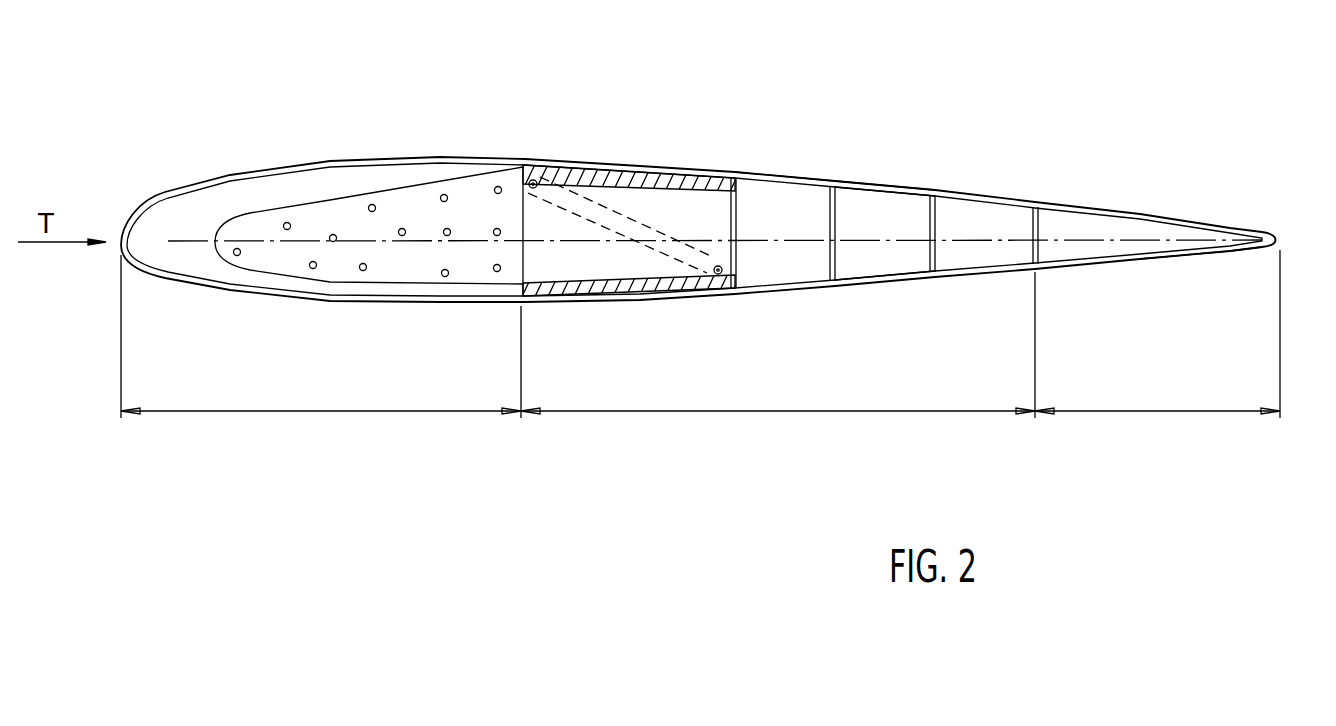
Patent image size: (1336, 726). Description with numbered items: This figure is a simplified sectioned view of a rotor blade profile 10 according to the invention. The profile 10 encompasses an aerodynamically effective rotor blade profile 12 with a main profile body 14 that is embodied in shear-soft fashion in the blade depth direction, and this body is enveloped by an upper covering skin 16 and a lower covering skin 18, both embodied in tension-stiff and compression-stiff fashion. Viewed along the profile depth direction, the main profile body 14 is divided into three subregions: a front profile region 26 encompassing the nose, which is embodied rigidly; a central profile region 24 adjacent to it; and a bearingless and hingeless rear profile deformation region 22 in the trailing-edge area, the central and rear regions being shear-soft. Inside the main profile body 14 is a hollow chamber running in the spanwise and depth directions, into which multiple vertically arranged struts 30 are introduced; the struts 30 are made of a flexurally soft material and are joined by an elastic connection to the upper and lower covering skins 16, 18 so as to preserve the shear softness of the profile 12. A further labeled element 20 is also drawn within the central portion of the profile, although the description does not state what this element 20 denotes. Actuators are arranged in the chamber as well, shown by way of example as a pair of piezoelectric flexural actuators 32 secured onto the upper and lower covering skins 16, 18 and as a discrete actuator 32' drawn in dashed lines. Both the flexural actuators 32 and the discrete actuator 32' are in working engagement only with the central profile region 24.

The profile 10 is at (160, 52).
The rotor blade profile 12 is at (278, 152).
The main profile body 14 is at (473, 150).
The upper covering skin 16 is at (800, 180).
The lower covering skin 18 is at (1160, 263).
The cell between ribs 20 is at (883, 213).
The rear profile deformation region 22 is at (1157, 392).
The central profile region 24 is at (778, 394).
The front profile region 26 is at (321, 396).
The struts 30 is at (734, 207).
The piezoelectric flexural actuators 32 is at (625, 185).
The discrete actuator 32' is at (631, 268).